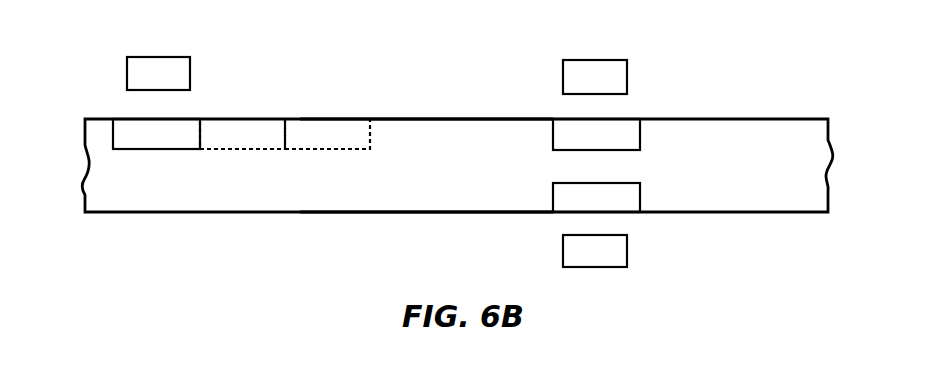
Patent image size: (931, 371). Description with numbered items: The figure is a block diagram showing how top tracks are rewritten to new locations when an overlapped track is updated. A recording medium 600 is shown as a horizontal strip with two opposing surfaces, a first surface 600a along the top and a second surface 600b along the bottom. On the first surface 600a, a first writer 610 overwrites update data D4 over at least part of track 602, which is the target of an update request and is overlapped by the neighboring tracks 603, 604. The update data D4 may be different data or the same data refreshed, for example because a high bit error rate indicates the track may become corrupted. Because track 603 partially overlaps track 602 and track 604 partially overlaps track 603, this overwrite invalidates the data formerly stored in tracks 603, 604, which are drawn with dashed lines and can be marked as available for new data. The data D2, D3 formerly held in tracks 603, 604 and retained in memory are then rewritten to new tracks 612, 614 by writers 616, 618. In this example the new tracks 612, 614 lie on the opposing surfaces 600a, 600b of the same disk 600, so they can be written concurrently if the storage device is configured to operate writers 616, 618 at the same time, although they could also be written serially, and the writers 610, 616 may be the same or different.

The recording medium 600 is at (85, 160).
The first surface of the recording medium 600a is at (420, 119).
The second surface of the recording medium 600b is at (427, 212).
The target track 602 is at (160, 150).
The top track 603 is at (232, 150).
The top track 604 is at (315, 150).
The first writer 610 is at (150, 57).
The new track 612 is at (640, 133).
The new track 614 is at (640, 189).
The writer 616 is at (591, 60).
The writer 618 is at (605, 268).